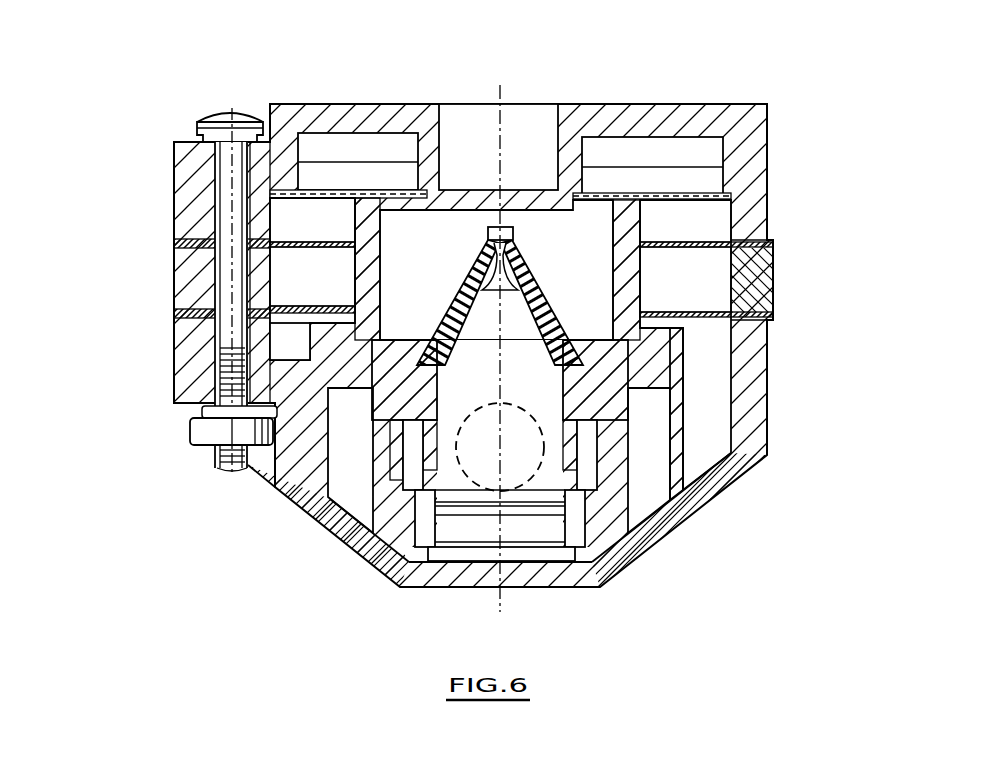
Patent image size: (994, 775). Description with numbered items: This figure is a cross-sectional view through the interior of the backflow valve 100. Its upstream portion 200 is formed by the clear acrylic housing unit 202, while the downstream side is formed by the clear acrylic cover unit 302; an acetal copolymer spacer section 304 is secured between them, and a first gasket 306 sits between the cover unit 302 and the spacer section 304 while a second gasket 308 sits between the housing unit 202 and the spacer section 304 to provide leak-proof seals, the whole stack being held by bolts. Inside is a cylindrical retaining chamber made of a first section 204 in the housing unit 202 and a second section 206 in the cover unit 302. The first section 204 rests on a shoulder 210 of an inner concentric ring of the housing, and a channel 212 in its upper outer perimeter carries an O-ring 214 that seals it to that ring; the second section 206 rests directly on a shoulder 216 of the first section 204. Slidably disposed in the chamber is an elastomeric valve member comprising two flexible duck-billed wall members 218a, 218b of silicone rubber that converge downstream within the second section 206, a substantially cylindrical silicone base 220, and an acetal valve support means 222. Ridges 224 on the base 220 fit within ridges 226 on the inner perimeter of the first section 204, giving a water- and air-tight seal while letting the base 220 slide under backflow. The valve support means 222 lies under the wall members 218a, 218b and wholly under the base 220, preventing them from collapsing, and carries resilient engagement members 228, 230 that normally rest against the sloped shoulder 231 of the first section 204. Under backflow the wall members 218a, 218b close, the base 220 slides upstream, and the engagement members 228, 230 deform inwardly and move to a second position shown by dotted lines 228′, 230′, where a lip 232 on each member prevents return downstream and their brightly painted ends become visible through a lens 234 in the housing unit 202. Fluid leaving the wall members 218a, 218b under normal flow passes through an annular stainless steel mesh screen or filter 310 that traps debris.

The backflow valve 100 is at (519, 72).
The upstream portion 200 is at (693, 390).
The housing unit 202 is at (174, 348).
The first section 204 is at (637, 512).
The second section 206 is at (378, 221).
The shoulder 210 is at (670, 403).
The channel 212 is at (702, 340).
The O-ring 214 is at (322, 350).
The shoulder 216 is at (600, 337).
The flexible duck-billed wall member 218a is at (480, 251).
The flexible duck-billed wall member 218b is at (523, 252).
The base 220 is at (553, 392).
The valve support means 222 is at (452, 392).
The ridges 224 is at (420, 337).
The ridges 226 is at (383, 405).
The resilient engagement member 228 is at (435, 444).
The dotted lines (second position of engagement member) 228′ is at (442, 531).
The resilient engagement member 230 is at (567, 482).
The dotted lines (second position of engagement member) 230′ is at (553, 562).
The sloped shoulder 231 is at (360, 508).
The lip 232 is at (398, 458).
The lens 234 is at (463, 584).
The cover unit 302 is at (174, 155).
The spacer section 304 is at (174, 252).
The first gasket 306 is at (286, 240).
The second gasket 308 is at (283, 312).
The mesh screen or filter 310 is at (313, 187).